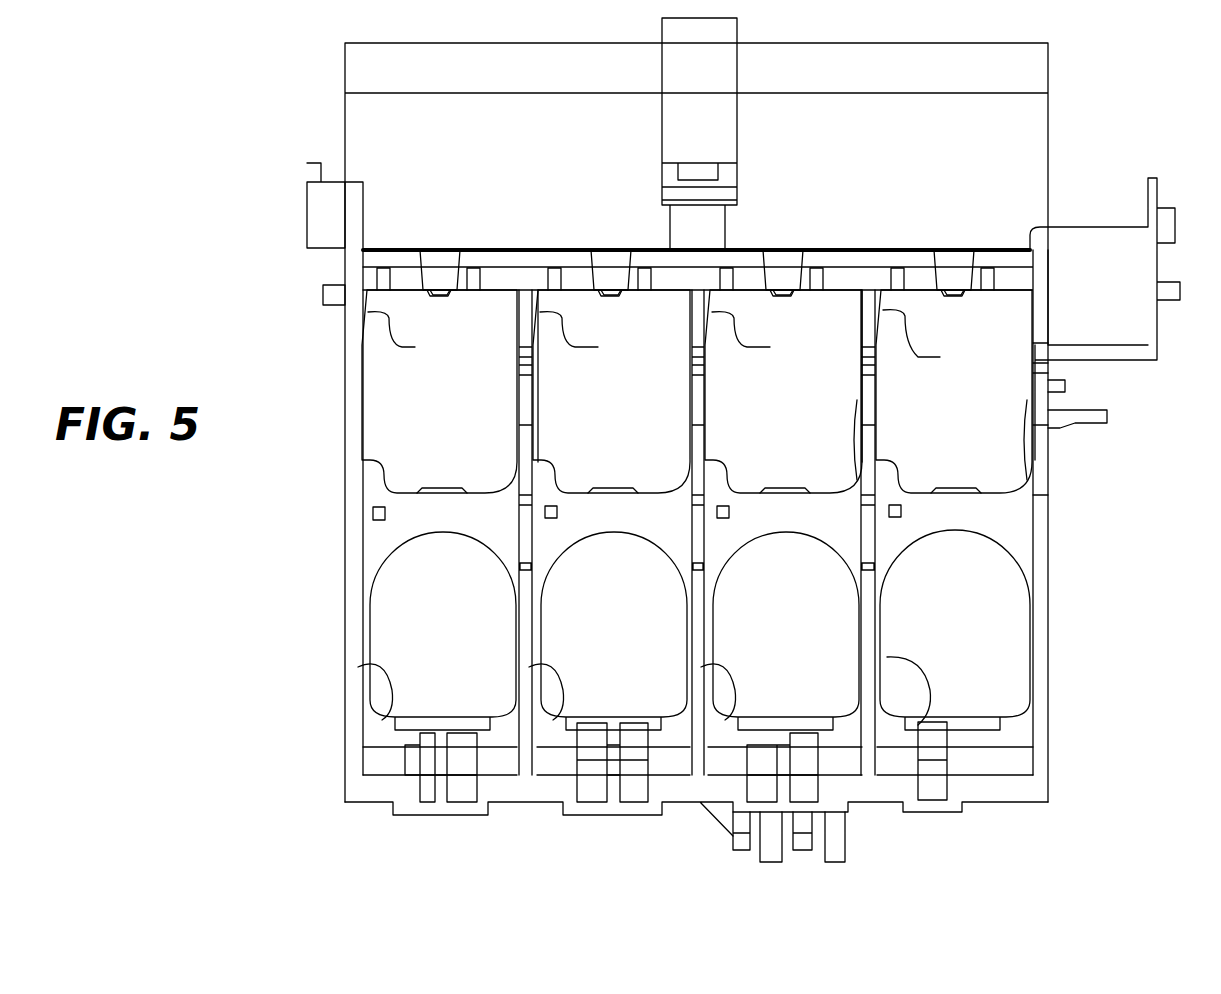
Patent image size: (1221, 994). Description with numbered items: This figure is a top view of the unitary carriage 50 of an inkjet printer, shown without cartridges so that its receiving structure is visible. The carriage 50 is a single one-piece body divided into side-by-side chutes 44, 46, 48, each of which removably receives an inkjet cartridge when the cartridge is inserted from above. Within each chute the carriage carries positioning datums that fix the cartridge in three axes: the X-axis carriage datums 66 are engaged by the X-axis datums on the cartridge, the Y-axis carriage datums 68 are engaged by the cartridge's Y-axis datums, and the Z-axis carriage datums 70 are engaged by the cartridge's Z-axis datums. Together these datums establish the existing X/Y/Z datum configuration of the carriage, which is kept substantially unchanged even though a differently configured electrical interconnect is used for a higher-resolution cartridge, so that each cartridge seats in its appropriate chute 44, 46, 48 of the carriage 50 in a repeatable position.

The chute 44 is at (412, 402).
The chute 46 is at (655, 365).
The chute 48 is at (822, 318).
The unitary carriage 50 is at (1050, 487).
The X-axis carriage datums 66 is at (883, 857).
The Y-axis carriage datums 68 is at (965, 443).
The Z-axis carriage datums 70 is at (383, 522).